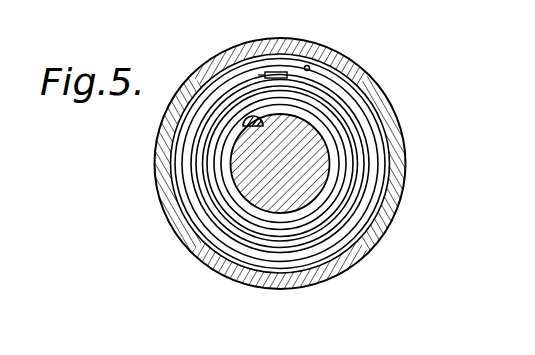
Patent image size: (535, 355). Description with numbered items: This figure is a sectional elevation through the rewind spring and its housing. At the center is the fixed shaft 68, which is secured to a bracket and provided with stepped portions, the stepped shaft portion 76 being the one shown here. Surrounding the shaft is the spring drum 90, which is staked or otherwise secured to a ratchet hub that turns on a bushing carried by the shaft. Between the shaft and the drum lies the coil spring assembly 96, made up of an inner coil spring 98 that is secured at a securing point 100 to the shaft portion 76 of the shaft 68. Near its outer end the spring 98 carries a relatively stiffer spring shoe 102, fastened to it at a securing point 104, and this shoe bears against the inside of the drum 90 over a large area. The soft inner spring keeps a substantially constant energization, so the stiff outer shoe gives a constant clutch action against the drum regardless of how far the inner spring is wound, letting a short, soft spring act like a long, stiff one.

The fixed shaft 68 is at (256, 207).
The stepped shaft portion 76 is at (312, 184).
The spring drum 90 is at (362, 80).
The coil spring assembly 96 is at (335, 155).
The inner coil spring 98 is at (350, 122).
The securing point 100 is at (245, 126).
The spring shoe 102 is at (308, 66).
The securing point 104 is at (270, 72).